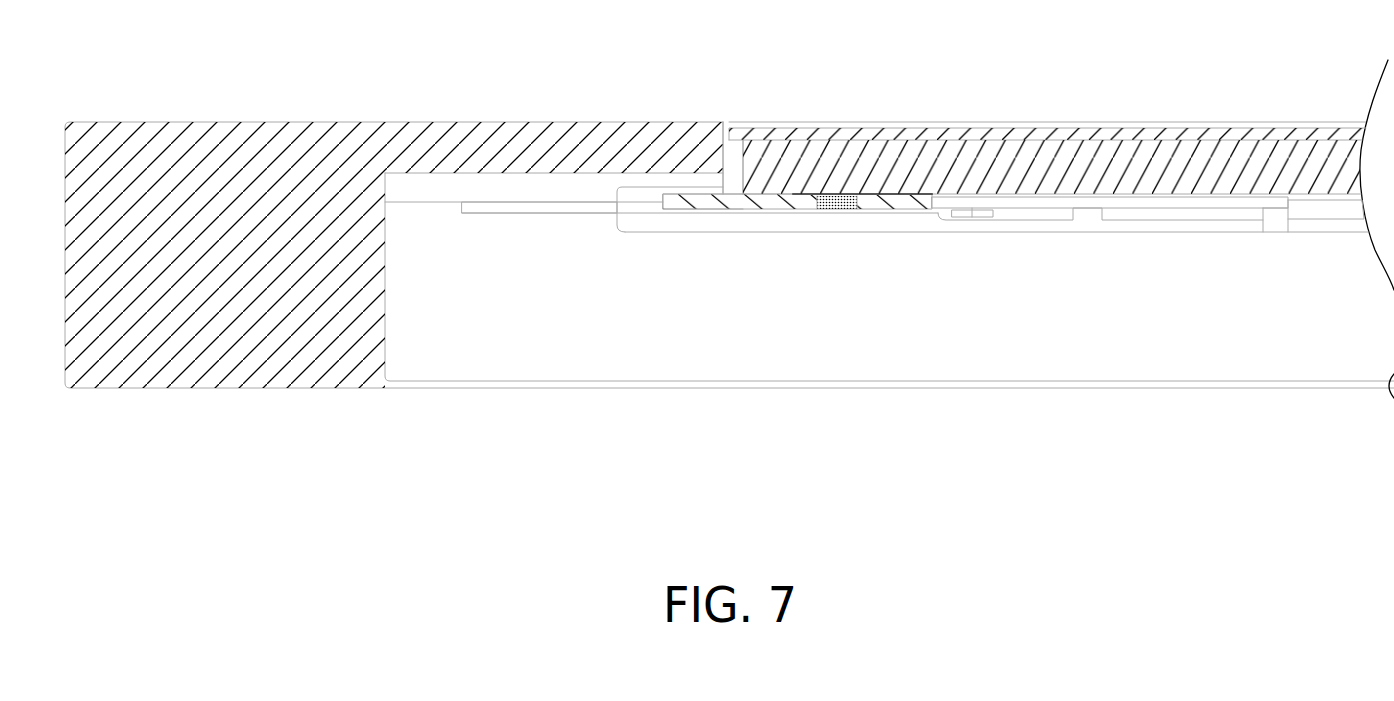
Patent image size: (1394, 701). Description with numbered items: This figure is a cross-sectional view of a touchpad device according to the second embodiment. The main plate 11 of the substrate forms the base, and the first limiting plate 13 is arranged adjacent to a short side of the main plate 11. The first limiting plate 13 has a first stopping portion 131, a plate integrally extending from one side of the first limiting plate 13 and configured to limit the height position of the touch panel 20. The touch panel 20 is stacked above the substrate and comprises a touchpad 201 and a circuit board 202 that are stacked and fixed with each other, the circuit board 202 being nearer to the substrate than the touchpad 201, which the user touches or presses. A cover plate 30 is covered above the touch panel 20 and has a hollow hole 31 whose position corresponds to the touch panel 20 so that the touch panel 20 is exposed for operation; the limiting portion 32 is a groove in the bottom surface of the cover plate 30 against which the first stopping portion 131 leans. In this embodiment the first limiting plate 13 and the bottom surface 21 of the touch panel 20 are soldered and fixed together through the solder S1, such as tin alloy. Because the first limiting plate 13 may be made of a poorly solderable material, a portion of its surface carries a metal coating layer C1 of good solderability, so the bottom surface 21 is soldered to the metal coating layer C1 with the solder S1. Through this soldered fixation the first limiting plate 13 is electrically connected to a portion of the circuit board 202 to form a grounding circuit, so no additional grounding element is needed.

The cover plate 30 is at (348, 121).
The hollow hole 31 is at (722, 127).
The limiting portion 32 is at (644, 193).
The first limiting plate 13 is at (778, 208).
The first stopping portion 131 is at (682, 203).
The solder S1 is at (842, 208).
The metal coating layer C1 is at (800, 195).
The touch panel 20 is at (1061, 207).
The touchpad 201 is at (1142, 56).
The circuit board 202 is at (1132, 153).
The bottom surface 21 is at (1023, 197).
The main plate 11 is at (1131, 222).